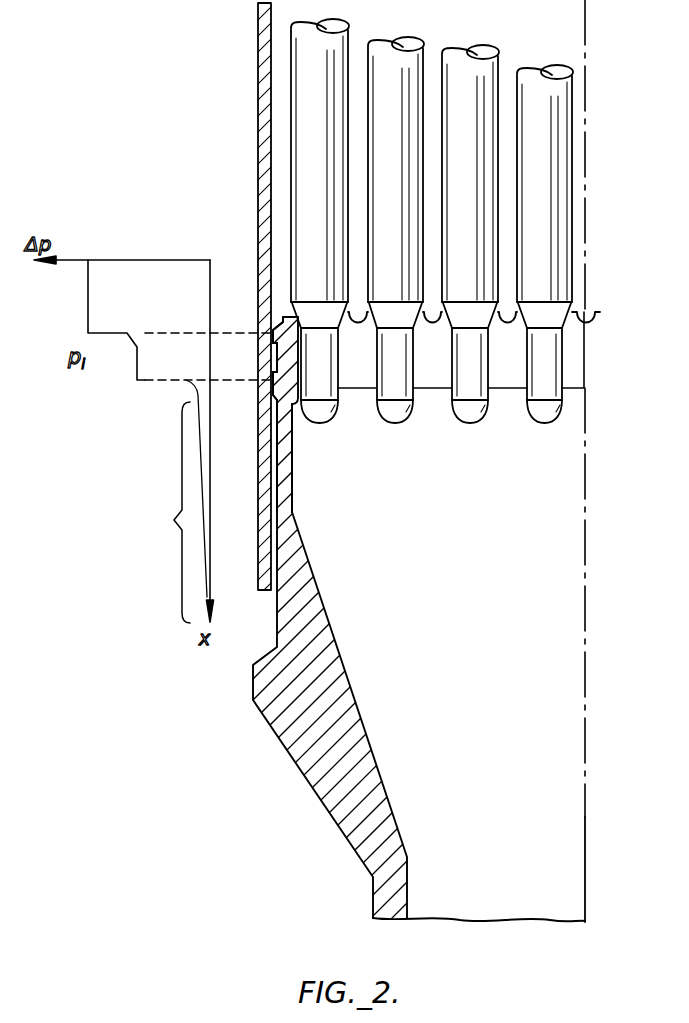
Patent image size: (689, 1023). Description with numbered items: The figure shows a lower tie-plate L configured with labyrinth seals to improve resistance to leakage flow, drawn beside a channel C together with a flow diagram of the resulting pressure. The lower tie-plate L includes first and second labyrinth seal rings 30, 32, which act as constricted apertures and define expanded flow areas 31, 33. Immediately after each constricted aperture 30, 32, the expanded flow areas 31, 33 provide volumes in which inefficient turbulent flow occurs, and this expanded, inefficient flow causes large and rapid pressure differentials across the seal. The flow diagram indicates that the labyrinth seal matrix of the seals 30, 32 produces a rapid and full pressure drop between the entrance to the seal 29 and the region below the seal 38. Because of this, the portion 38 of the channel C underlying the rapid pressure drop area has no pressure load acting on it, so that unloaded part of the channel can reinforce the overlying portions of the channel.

The entrance to the seal 29 is at (268, 298).
The first labyrinth seal ring 30 is at (273, 337).
The expanded flow area 31 is at (277, 367).
The second labyrinth seal ring 32 is at (277, 392).
The expanded flow area 33 is at (273, 420).
The region below the seal 38 is at (167, 512).
The channel C is at (264, 204).
The lower tie-plate L is at (388, 747).